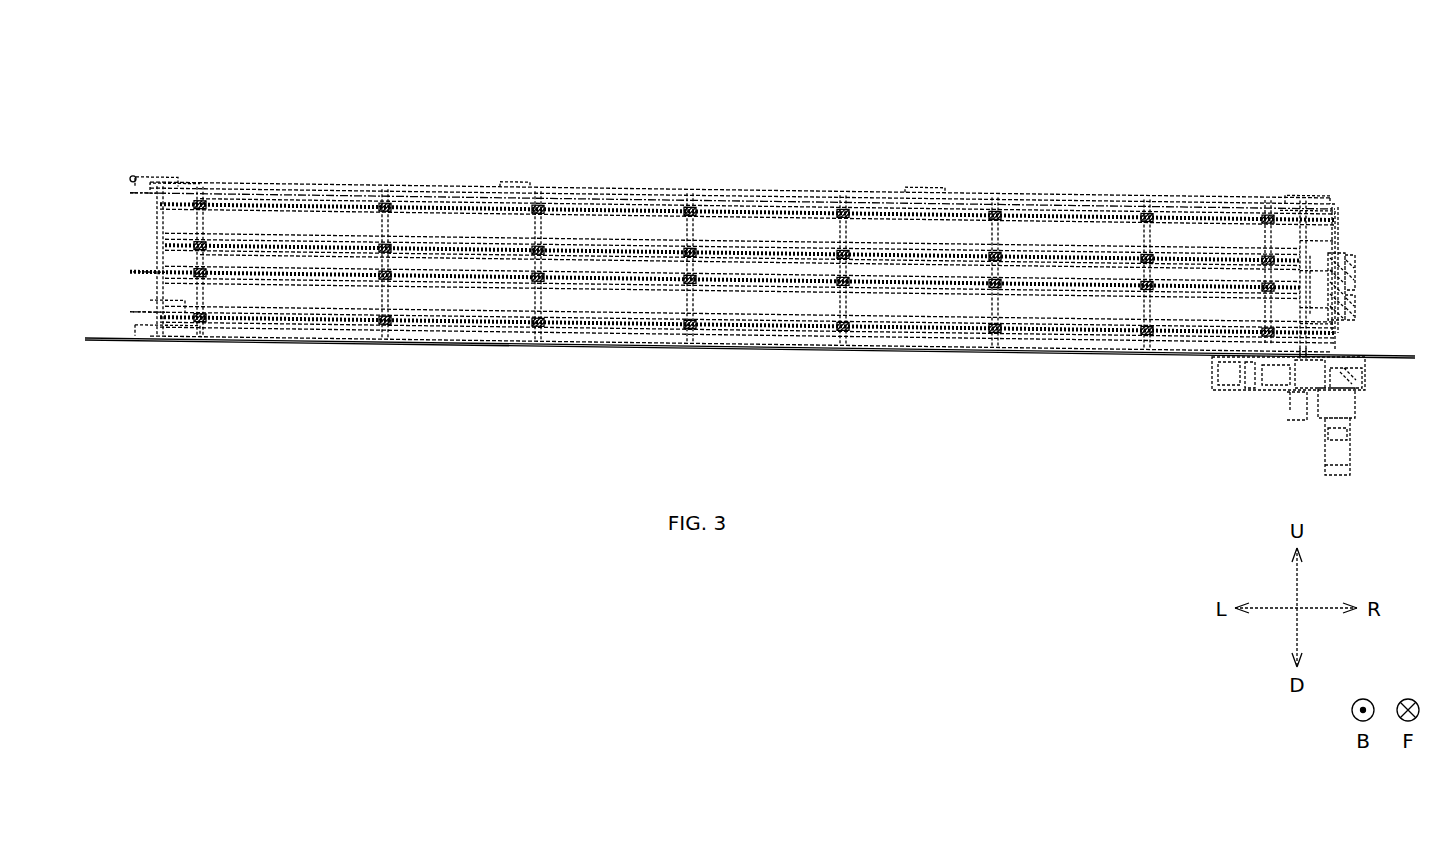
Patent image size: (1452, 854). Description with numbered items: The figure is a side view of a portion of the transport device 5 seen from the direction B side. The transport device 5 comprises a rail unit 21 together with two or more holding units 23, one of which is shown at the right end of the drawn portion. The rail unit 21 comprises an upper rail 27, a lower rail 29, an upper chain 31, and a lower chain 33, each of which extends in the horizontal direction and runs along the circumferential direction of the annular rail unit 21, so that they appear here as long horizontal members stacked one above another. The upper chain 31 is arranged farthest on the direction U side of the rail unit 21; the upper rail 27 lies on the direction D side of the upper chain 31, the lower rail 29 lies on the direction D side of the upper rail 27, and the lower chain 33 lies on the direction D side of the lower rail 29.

The transport device 5 is at (1337, 134).
The rail unit 21 is at (1087, 352).
The holding unit 23 is at (1356, 270).
The upper rail 27 is at (596, 240).
The lower rail 29 is at (596, 290).
The upper chain 31 is at (238, 192).
The lower chain 33 is at (240, 326).